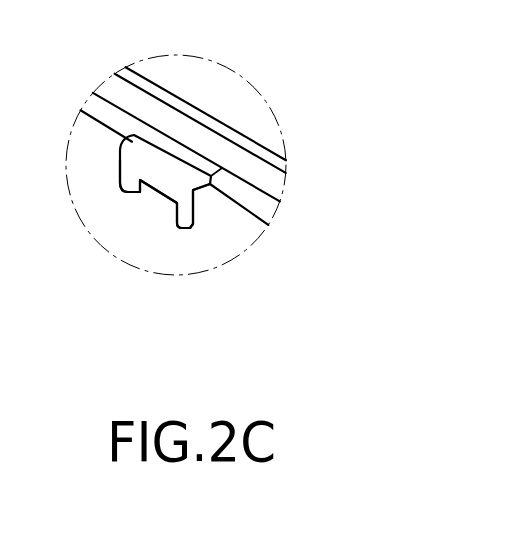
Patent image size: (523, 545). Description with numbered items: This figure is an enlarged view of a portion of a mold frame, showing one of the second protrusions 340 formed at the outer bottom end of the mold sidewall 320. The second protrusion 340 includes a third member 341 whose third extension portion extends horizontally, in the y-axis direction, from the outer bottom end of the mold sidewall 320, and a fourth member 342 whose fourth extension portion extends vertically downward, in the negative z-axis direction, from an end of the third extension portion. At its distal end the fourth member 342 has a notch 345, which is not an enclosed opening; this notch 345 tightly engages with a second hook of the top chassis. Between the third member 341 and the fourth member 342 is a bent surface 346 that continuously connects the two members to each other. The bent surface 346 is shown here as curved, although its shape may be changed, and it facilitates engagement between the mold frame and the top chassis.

The mold sidewall 320 is at (262, 197).
The second protrusion 340 is at (215, 172).
The third member 341 is at (180, 165).
The fourth member 342 is at (120, 187).
The notch 345 is at (150, 192).
The bent surface 346 is at (196, 191).